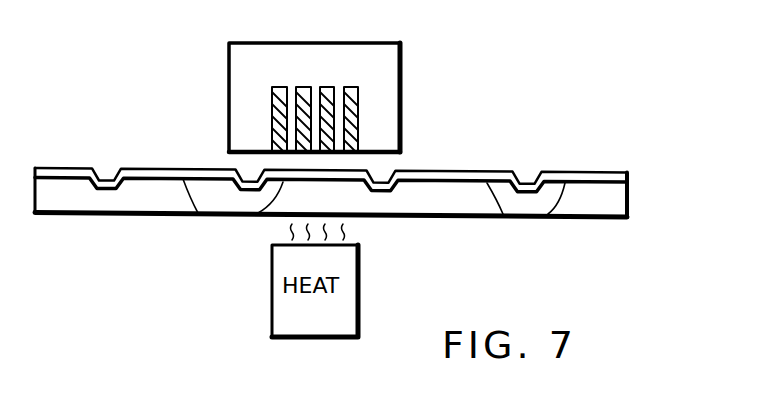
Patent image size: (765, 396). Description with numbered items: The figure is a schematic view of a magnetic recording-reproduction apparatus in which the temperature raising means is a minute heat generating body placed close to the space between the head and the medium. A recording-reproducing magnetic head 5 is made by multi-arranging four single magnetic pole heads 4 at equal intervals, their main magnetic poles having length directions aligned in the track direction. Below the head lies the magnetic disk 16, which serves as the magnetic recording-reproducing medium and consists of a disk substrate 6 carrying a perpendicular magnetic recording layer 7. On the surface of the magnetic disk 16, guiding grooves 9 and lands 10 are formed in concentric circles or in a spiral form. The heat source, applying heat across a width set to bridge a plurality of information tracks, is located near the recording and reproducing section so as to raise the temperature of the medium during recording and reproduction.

The single magnetic pole head 4 is at (359, 107).
The recording-reproducing magnetic head 5 is at (403, 63).
The disk substrate 6 is at (600, 212).
The perpendicular magnetic recording layer 7 is at (606, 170).
The guiding grooves 9 is at (250, 173).
The lands 10 is at (258, 213).
The magnetic disk 16 is at (358, 195).